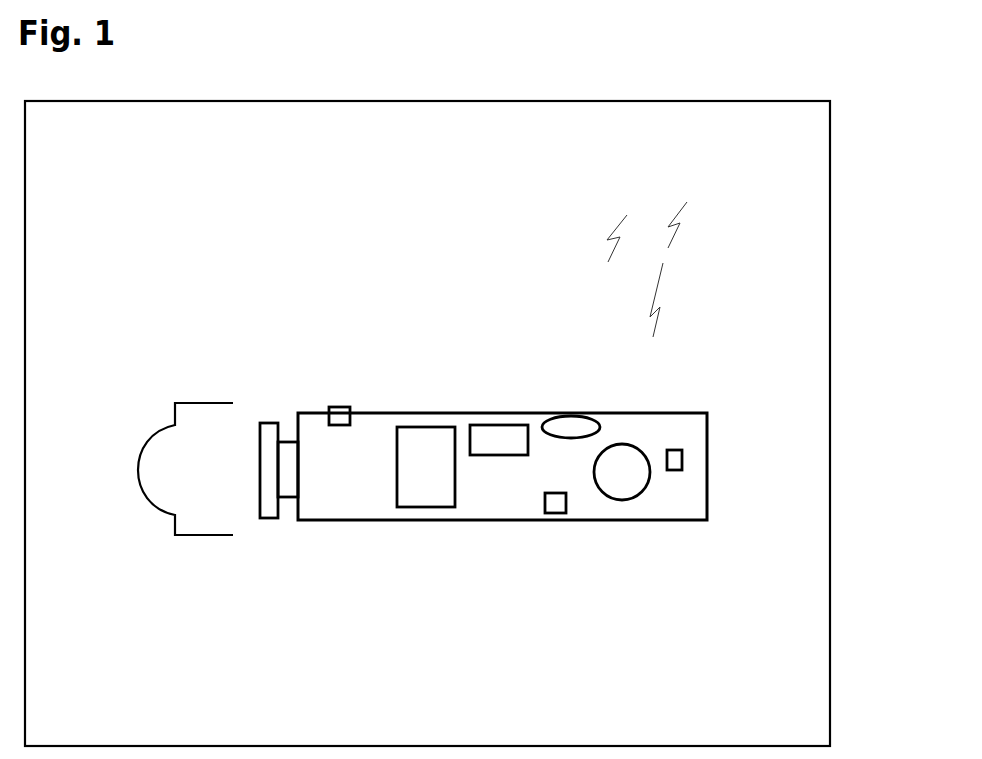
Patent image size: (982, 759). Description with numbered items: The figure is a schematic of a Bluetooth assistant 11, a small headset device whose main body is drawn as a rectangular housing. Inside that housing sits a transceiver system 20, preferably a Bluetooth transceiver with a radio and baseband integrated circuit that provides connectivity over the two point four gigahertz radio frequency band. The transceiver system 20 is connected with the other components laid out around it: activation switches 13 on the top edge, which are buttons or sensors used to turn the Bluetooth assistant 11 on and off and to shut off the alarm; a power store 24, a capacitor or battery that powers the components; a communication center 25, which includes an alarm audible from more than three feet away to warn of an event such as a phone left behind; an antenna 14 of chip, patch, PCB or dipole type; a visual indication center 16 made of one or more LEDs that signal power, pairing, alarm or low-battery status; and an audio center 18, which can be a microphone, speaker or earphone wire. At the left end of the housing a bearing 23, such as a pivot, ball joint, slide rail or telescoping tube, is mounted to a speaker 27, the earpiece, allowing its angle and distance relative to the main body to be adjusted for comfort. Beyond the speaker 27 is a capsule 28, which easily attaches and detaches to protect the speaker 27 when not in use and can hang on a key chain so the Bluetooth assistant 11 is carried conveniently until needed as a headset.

The Bluetooth assistant 11 is at (830, 287).
The activation switches 13 is at (328, 407).
The antenna 14 is at (670, 450).
The visual indication center 16 is at (630, 500).
The audio center 18 is at (552, 513).
The transceiver system 20 is at (427, 507).
The bearing 23 is at (283, 498).
The power store 24 is at (503, 425).
The communication center 25 is at (570, 416).
The speaker 27 is at (257, 421).
The capsule 28 is at (198, 403).